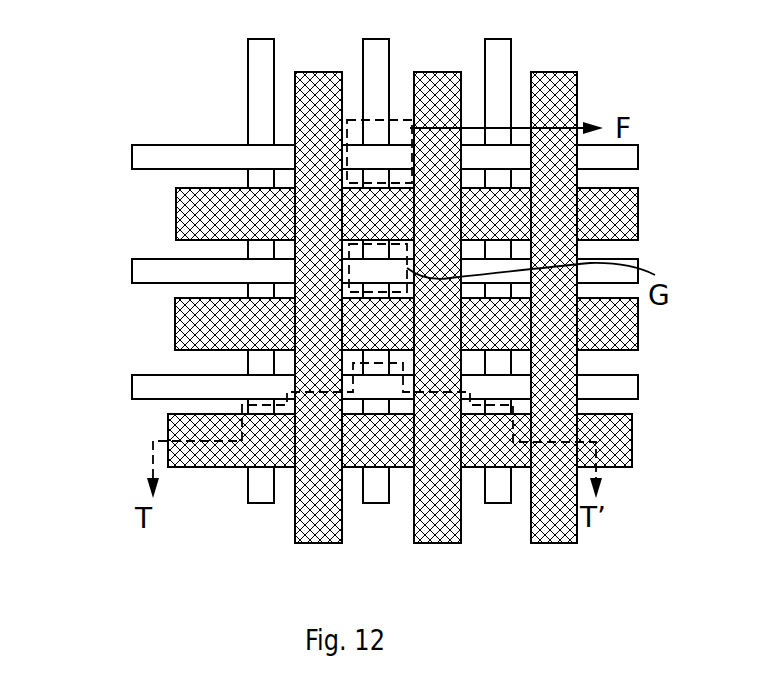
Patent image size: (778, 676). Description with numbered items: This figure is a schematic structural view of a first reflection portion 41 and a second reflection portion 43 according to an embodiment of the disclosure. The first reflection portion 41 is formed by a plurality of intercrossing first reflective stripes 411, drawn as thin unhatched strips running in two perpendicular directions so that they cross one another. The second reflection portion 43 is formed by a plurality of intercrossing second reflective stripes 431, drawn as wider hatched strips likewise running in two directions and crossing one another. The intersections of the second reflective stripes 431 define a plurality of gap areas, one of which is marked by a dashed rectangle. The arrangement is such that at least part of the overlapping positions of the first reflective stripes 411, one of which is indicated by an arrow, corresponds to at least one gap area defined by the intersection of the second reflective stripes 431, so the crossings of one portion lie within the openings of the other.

The first reflection portion 41 is at (117, 37).
The first reflective stripe 411 is at (262, 68).
The second reflection portion 43 is at (82, 218).
The second reflective stripe 431 is at (310, 248).